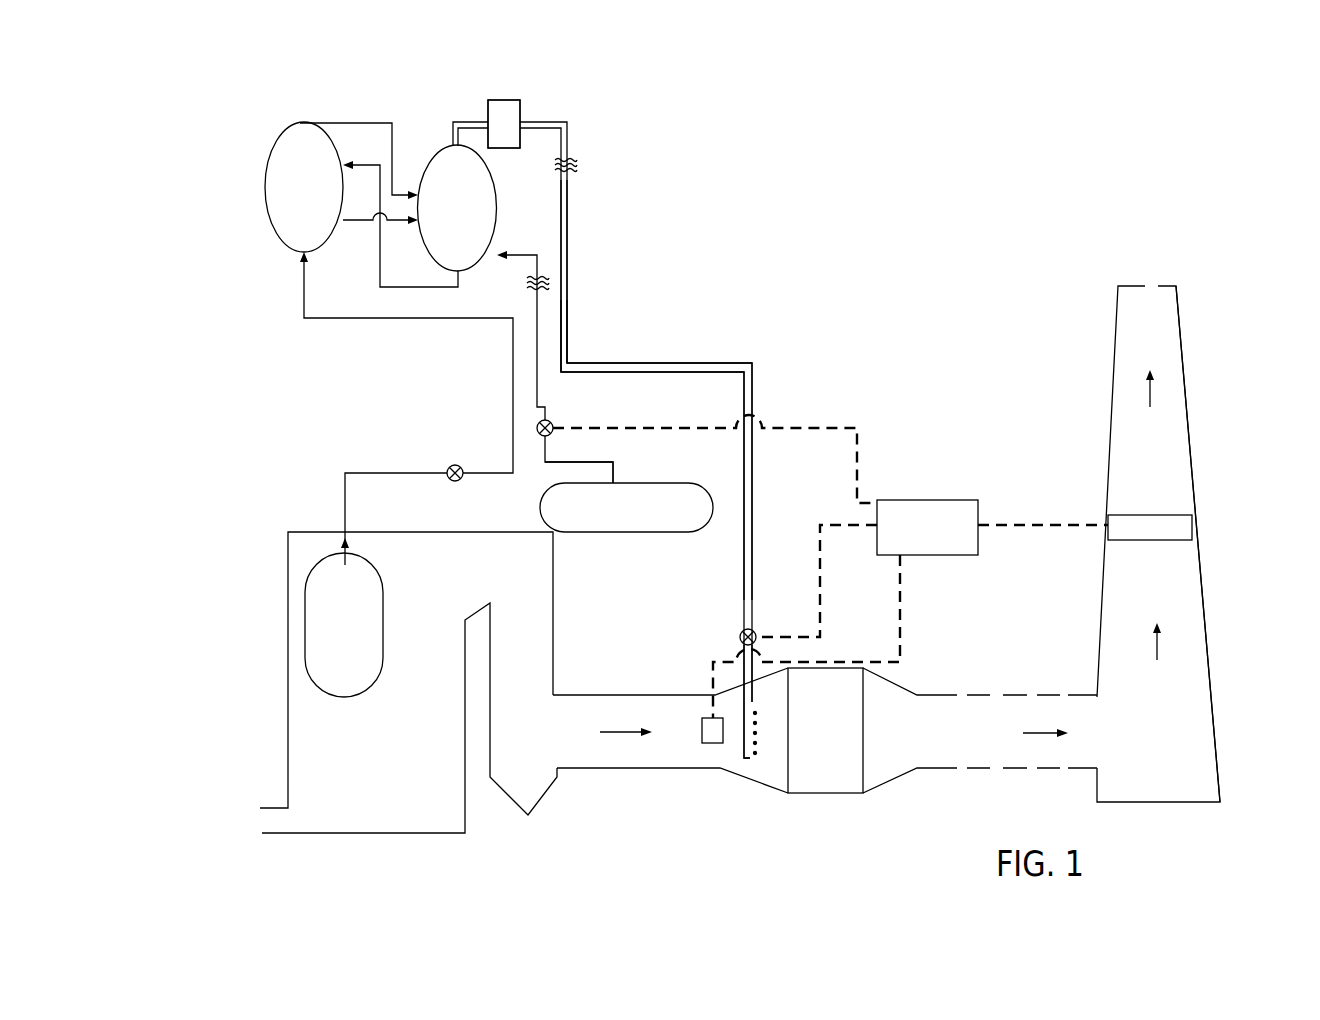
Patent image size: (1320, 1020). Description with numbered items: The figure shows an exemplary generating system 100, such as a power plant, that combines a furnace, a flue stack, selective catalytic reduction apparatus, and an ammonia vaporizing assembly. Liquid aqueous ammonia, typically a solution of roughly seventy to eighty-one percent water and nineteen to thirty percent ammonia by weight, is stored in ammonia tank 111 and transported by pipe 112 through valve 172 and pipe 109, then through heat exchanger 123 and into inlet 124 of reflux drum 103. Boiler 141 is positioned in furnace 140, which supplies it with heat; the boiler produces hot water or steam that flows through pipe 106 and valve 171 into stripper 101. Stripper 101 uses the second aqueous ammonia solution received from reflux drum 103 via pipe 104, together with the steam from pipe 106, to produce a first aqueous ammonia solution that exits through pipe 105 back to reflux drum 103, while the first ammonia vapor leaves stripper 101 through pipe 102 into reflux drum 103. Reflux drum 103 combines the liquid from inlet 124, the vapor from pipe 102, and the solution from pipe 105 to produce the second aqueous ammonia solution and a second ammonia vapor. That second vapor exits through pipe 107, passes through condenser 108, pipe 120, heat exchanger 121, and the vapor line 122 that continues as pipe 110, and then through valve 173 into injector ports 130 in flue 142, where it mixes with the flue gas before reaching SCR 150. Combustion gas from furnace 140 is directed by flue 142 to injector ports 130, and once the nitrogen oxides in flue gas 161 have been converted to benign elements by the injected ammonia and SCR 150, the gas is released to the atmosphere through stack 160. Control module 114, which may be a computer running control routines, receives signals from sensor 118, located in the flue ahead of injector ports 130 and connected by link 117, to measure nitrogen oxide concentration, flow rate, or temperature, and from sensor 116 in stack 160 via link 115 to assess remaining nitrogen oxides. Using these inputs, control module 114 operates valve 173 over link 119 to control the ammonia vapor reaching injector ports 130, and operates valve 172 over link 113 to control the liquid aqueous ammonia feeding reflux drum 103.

The system 100 is at (970, 160).
The stripper 101 is at (276, 126).
The pipe 102 is at (382, 122).
The reflux drum 103 is at (499, 205).
The pipe 104 is at (380, 270).
The pipe 105 is at (356, 220).
The pipe 106 is at (512, 398).
The pipe 107 is at (468, 120).
The condenser 108 is at (520, 105).
The pipe 109 is at (548, 420).
The pipe 110 is at (620, 363).
The ammonia tank 111 is at (710, 494).
The pipe 112 is at (613, 462).
The link 113 is at (838, 431).
The control module 114 is at (965, 499).
The link 115 is at (1030, 524).
The sensor 116 is at (1150, 514).
The link 117 is at (901, 637).
The sensor 118 is at (701, 728).
The link 119 is at (820, 576).
The pipe 120 is at (568, 128).
The heat exchanger 121 is at (578, 165).
The vapor line 122 is at (568, 242).
The heat exchanger 123 is at (528, 285).
The inlet 124 is at (529, 254).
The injector ports 130 is at (765, 750).
The furnace 140 is at (288, 715).
The boiler 141 is at (310, 600).
The flue 142 is at (618, 770).
The selective catalytic reduction (SCR) 150 is at (840, 775).
The stack 160 is at (1193, 435).
The flue gas 161 is at (1190, 707).
The valve 171 is at (455, 464).
The valve 172 is at (550, 438).
The valve 173 is at (742, 632).